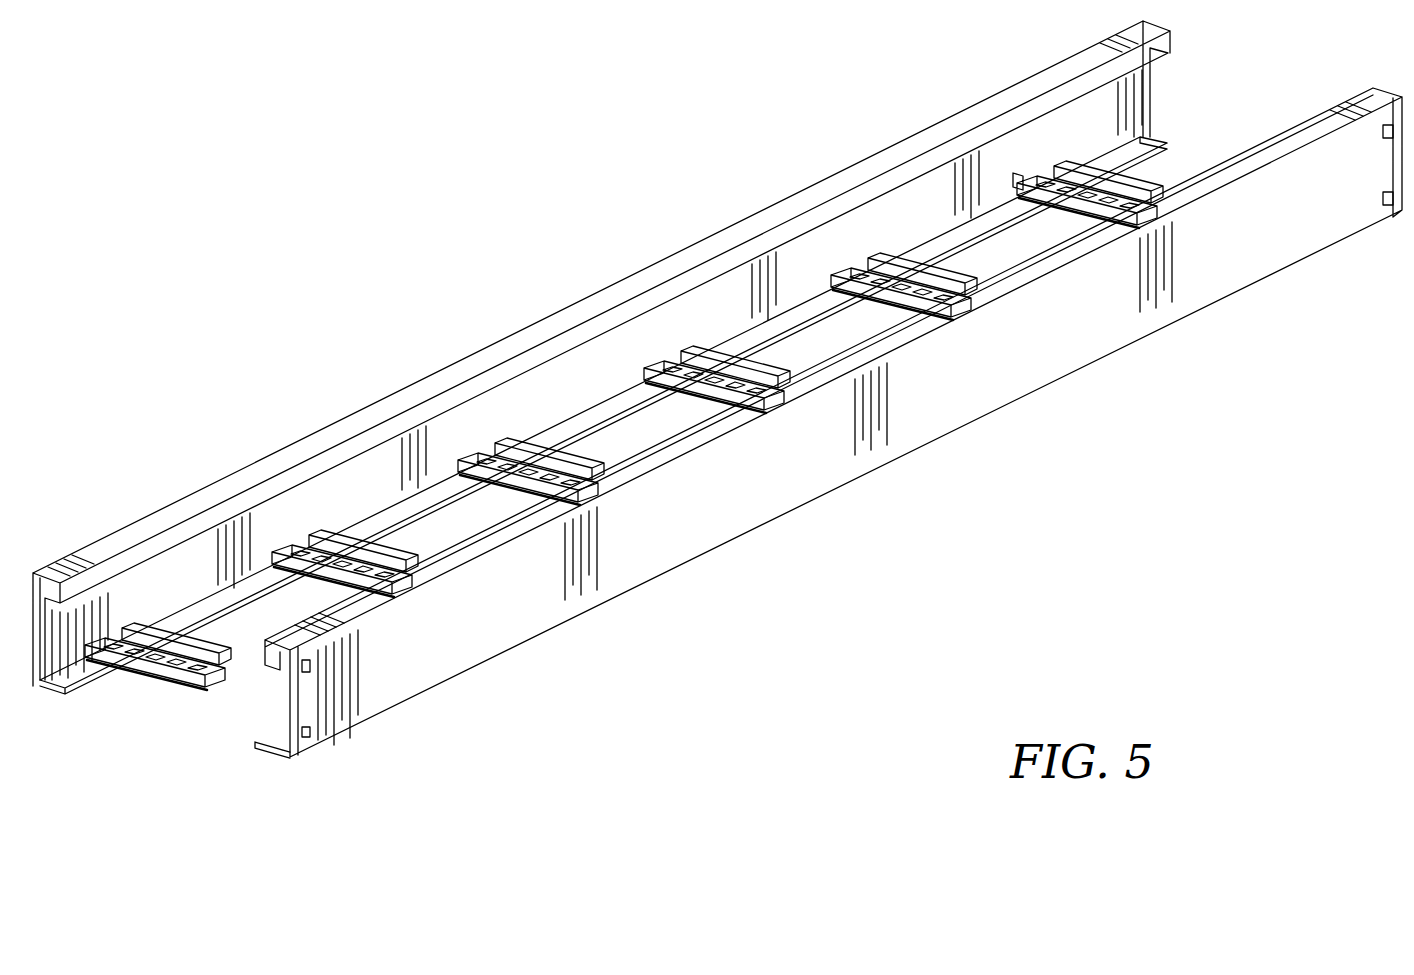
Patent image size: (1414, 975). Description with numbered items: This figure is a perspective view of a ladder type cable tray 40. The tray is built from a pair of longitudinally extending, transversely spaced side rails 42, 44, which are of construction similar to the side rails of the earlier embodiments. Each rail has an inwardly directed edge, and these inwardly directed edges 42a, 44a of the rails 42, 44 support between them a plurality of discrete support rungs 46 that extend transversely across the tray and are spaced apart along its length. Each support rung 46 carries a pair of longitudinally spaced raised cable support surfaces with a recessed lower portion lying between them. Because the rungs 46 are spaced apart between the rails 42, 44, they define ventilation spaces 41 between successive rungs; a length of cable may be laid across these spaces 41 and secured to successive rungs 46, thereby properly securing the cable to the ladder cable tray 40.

The ladder type cable tray 40 is at (717, 413).
The ventilation spaces 41 is at (818, 345).
The side rail 42 is at (601, 385).
The inwardly directed edge 42a is at (56, 690).
The side rail 44 is at (828, 447).
The inwardly directed edge 44a is at (275, 748).
The support rung 46 is at (490, 456).